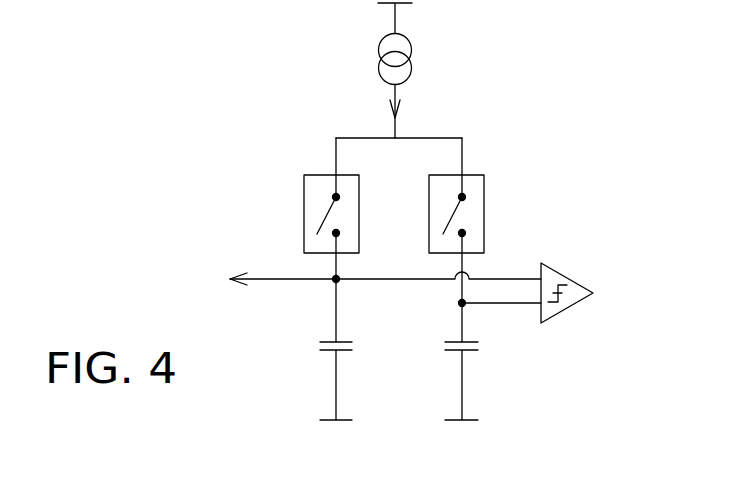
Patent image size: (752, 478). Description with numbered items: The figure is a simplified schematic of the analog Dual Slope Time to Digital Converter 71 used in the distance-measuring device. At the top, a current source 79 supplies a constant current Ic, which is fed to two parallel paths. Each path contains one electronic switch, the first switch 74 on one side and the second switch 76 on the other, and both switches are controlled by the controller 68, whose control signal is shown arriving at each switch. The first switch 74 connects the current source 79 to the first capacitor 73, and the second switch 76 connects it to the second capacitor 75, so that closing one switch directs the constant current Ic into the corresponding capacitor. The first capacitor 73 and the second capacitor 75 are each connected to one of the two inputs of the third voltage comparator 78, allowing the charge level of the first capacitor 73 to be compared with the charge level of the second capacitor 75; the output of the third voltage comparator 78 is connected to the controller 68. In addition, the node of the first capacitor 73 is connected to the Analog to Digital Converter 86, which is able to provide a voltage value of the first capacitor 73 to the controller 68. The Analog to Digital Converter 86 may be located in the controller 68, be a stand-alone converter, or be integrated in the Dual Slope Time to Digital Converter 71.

The Dual Slope Time to Digital Converter 71 is at (262, 71).
The current source 79 is at (412, 52).
The constant current Ic is at (396, 113).
The first switch 74 is at (304, 184).
The second switch 76 is at (485, 184).
The controller 68 is at (266, 219).
The Analog to Digital Converter 86 is at (369, 279).
The third voltage comparator 78 is at (577, 287).
The first capacitor 73 is at (348, 348).
The second capacitor 75 is at (478, 347).